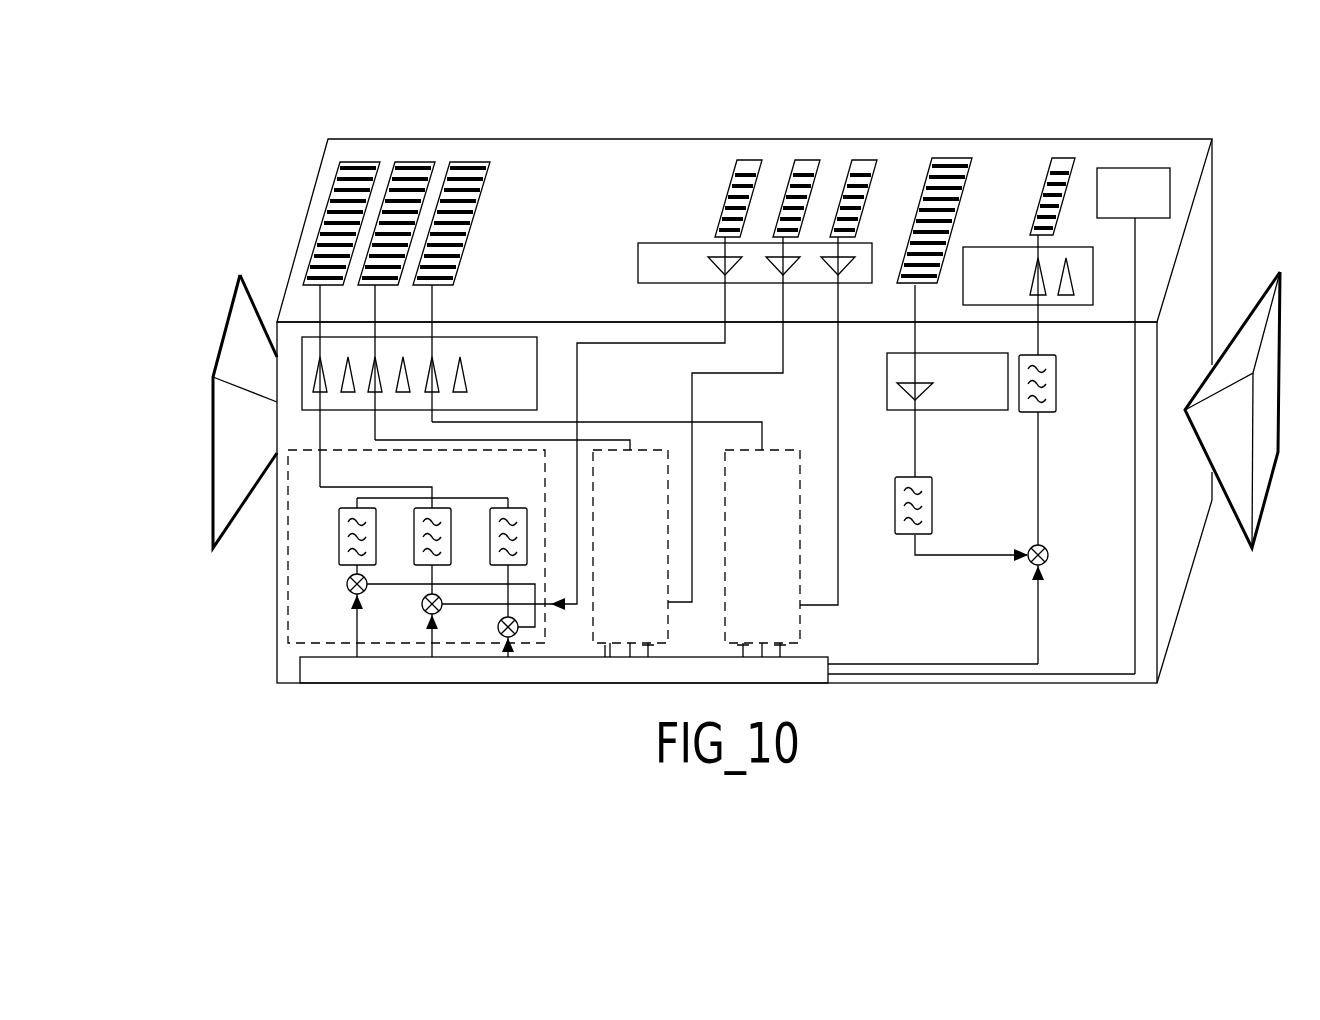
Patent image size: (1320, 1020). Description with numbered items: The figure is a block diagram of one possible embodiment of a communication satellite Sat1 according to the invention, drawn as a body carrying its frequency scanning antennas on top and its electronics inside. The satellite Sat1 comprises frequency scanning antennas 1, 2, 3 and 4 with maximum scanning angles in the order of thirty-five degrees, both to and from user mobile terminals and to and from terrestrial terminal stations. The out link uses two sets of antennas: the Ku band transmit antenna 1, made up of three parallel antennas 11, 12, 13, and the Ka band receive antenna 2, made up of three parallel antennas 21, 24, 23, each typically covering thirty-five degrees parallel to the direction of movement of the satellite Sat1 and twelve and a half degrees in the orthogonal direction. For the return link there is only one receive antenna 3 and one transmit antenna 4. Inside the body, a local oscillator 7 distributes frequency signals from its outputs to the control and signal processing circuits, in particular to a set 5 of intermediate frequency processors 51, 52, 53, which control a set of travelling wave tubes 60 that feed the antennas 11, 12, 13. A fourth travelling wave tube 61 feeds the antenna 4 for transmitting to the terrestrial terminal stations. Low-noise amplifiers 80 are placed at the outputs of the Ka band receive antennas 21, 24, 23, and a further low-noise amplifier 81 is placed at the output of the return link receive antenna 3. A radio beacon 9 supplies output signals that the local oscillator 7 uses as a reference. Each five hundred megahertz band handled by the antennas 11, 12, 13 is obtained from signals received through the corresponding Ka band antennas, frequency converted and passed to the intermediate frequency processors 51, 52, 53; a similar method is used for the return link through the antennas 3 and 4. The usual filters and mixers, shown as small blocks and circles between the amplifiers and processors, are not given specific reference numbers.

The satellite Sat1 is at (875, 116).
The Ku band transmit antenna 1 is at (355, 242).
The antenna 11 is at (329, 288).
The antenna 12 is at (384, 288).
The antenna 13 is at (442, 288).
The Ka band receive antenna 2 is at (751, 190).
The antenna 21 is at (718, 217).
The transmitting antenna 24 is at (780, 208).
The antenna 23 is at (860, 200).
The receive antenna 3 is at (960, 193).
The transmit antenna 4 is at (1075, 166).
The radio beacon 9 is at (1154, 168).
The set of travelling wave tubes 60 is at (542, 338).
The fourth travelling wave tube 61 is at (964, 293).
The low-noise amplifiers 80 is at (638, 253).
The low-noise amplifier 81 is at (888, 388).
The set of intermediate frequency processors 5 is at (488, 517).
The intermediate frequency processor 51 is at (288, 540).
The intermediate frequency processor 52 is at (665, 426).
The intermediate frequency processor 53 is at (791, 443).
The local oscillator 7 is at (297, 668).